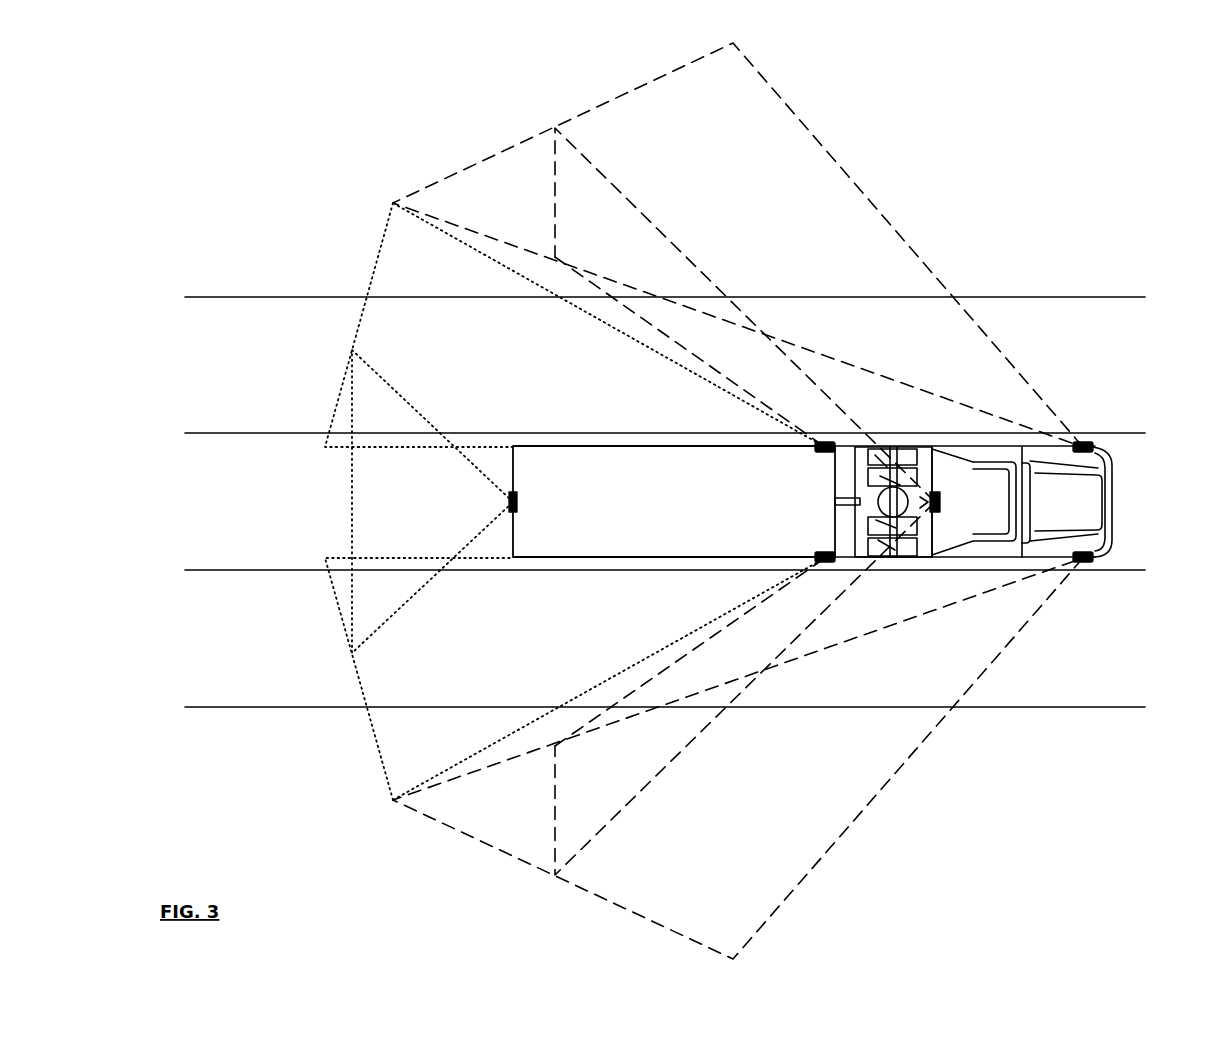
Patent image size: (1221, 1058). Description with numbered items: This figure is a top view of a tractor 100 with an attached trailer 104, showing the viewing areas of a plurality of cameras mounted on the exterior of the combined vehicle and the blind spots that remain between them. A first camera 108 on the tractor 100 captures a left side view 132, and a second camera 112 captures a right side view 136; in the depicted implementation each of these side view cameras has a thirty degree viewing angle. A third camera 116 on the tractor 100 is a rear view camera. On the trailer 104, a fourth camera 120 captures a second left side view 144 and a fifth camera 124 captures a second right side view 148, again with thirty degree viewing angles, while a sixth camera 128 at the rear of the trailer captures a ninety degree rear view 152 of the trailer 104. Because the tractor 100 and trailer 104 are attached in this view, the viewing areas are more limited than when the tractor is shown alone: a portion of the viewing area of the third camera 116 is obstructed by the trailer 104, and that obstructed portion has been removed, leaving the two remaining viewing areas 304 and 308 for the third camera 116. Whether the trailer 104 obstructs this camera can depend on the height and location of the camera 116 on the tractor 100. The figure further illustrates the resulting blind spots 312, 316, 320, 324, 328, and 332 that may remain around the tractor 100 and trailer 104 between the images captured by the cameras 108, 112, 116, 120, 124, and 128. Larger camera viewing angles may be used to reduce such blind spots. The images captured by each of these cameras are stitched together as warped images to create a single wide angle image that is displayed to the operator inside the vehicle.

The tractor 100 is at (1115, 500).
The trailer 104 is at (540, 445).
The first camera 108 is at (1085, 443).
The second camera 112 is at (1085, 565).
The third camera 116 is at (940, 495).
The fourth camera 120 is at (830, 442).
The fifth camera 124 is at (827, 568).
The sixth camera 128 is at (510, 492).
The left side view 132 is at (520, 140).
The right side view 136 is at (612, 902).
The second left side view 144 is at (357, 333).
The second right side view 148 is at (372, 727).
The rear view of the trailer 152 is at (348, 490).
The viewing area 304 is at (553, 195).
The viewing area 308 is at (557, 807).
The blind spot 312 is at (917, 415).
The blind spot 316 is at (910, 585).
The blind spot 320 is at (537, 268).
The blind spot 324 is at (547, 723).
The blind spot 328 is at (487, 467).
The blind spot 332 is at (485, 537).